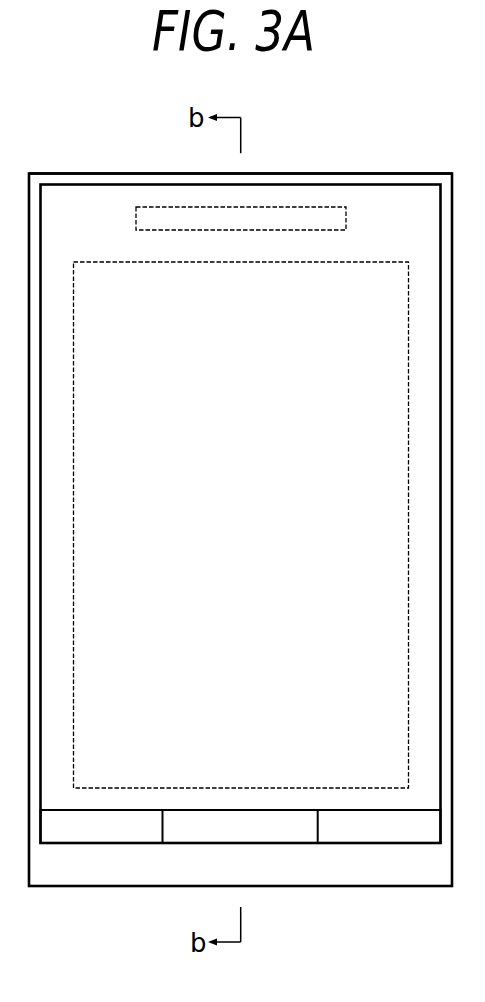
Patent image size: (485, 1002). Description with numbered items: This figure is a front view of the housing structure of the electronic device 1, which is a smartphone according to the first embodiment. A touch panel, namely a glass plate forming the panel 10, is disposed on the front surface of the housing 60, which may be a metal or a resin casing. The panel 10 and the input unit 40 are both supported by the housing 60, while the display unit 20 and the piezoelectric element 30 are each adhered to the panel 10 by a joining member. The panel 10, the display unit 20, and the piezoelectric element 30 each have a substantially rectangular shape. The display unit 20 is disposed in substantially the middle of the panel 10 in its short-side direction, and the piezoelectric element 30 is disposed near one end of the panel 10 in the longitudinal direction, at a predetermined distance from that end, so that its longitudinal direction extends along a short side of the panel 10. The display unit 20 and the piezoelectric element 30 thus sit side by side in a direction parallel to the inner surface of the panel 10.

The electronic device 1 is at (91, 152).
The panel 10 is at (362, 185).
The display unit 20 is at (363, 262).
The piezoelectric element 30 is at (136, 216).
The input unit 40 is at (57, 832).
The housing 60 is at (279, 174).